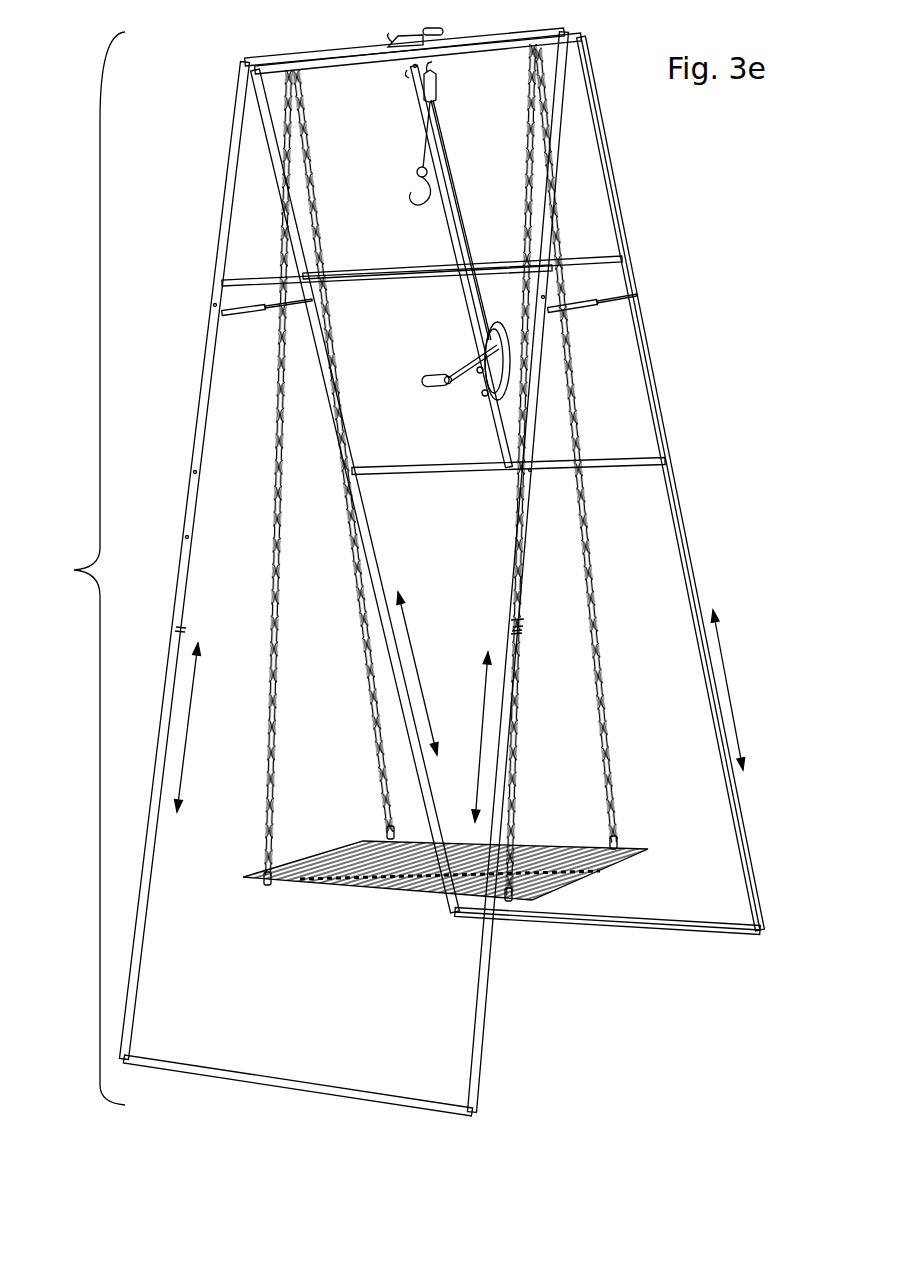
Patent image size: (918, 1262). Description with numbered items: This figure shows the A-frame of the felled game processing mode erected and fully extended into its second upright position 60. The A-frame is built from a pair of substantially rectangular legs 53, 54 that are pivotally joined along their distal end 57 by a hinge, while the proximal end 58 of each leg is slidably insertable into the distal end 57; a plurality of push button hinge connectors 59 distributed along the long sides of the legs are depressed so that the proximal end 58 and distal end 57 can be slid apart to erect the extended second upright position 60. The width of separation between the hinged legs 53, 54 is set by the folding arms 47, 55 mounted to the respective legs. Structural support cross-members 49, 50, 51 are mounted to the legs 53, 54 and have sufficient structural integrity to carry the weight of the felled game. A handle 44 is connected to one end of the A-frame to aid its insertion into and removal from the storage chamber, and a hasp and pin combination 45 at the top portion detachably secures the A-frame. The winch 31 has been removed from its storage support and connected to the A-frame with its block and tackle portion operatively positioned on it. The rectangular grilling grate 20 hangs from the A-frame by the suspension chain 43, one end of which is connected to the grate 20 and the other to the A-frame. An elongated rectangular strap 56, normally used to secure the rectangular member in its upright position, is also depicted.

The rectangular grilling grate 20 is at (300, 880).
The winch 31 is at (492, 322).
The suspension chain 43 is at (604, 568).
The handle 44 is at (444, 30).
The hasp and pin combination 45 is at (387, 42).
The folding arm 47 is at (591, 306).
The structural support cross-member 49 is at (406, 476).
The structural support cross-member 50 is at (348, 270).
The structural support cross-member 51 is at (490, 428).
The rectangular leg 53 is at (612, 183).
The rectangular leg 54 is at (523, 608).
The folding arm 55 is at (250, 316).
The elongated rectangular strap 56 is at (643, 925).
The distal end 57 is at (296, 44).
The proximal end 58 is at (226, 1090).
The push button hinge connector 59 is at (202, 392).
The second upright position 60 is at (74, 570).